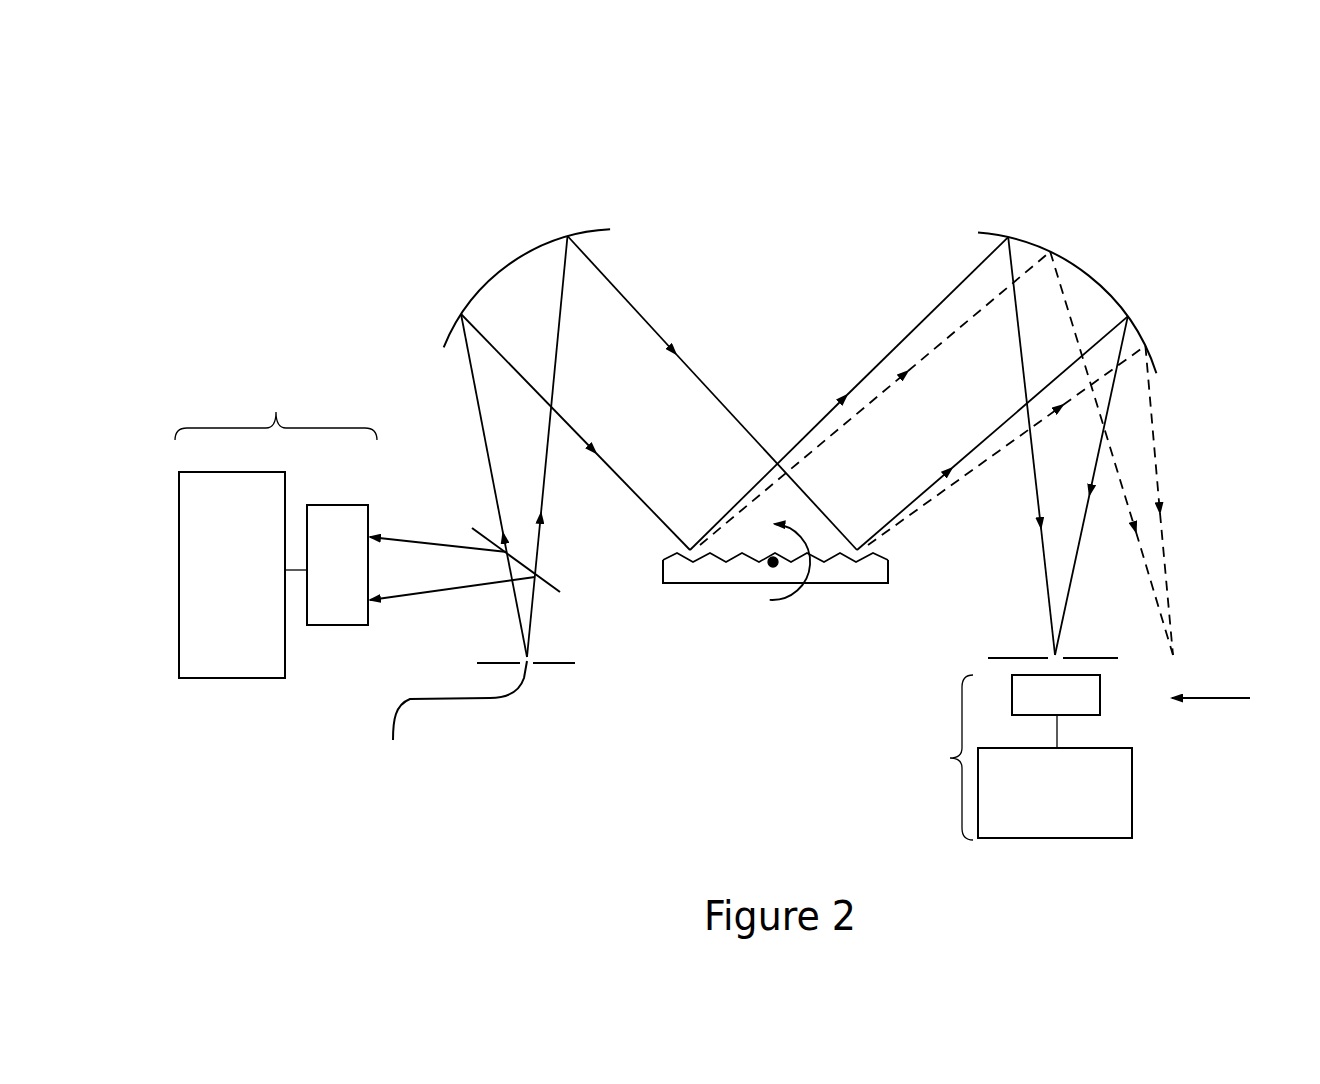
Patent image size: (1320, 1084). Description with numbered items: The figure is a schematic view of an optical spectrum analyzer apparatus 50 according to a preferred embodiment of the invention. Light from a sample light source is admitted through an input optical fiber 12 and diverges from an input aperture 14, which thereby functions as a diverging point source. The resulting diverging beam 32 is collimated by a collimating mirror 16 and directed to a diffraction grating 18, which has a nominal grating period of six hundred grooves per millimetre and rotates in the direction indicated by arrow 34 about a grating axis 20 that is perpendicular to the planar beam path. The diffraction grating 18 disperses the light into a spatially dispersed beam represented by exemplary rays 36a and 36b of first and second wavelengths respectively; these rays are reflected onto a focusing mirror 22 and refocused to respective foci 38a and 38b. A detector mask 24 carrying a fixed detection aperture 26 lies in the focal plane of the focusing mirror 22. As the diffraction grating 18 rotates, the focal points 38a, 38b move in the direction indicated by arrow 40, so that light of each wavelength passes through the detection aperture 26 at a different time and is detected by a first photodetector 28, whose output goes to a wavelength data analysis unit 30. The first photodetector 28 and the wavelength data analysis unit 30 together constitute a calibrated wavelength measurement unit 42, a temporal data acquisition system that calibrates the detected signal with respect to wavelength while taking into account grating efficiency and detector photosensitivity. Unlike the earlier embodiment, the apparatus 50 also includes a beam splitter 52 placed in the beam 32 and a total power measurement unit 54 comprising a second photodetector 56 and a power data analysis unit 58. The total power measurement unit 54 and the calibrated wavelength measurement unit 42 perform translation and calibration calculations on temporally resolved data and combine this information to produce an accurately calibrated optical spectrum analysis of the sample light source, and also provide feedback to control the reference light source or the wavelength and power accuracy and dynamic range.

The optical fiber 12 is at (430, 698).
The entry aperture 14 is at (525, 656).
The collimating mirror 16 is at (507, 265).
The diffraction grating 18 is at (663, 572).
The grating axis 20 is at (769, 566).
The focusing mirror 22 is at (1022, 240).
The detector mask 24 is at (1080, 656).
The detection aperture 26 is at (1060, 663).
The first photodetector 28 is at (1056, 695).
The wavelength data analysis unit 30 is at (1055, 776).
The diverging beam 32 is at (492, 481).
The arrow 34 is at (795, 588).
The ray of first wavelength 36a is at (930, 313).
The ray of second wavelength 36b is at (883, 392).
The focus of first wavelength 38a is at (1053, 654).
The focus of second wavelength 38b is at (1178, 656).
The arrow 40 is at (1250, 698).
The calibrated wavelength measurement unit 42 is at (1022, 757).
The optical spectrum analyzer apparatus 50 is at (713, 158).
The beam splitter 52 is at (547, 582).
The total power measurement unit 54 is at (355, 528).
The second photodetector 56 is at (337, 565).
The power data analysis unit 58 is at (232, 575).